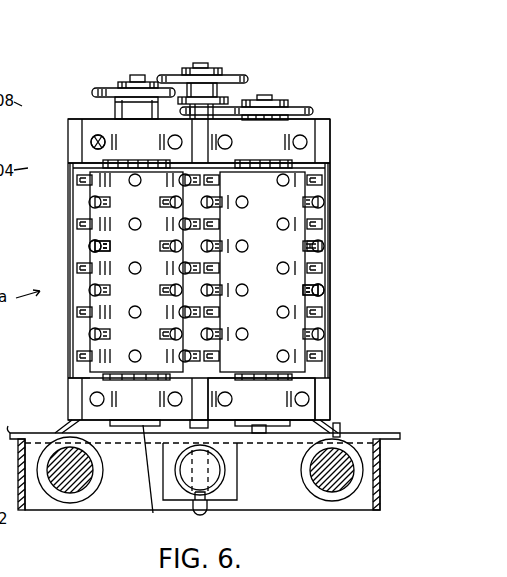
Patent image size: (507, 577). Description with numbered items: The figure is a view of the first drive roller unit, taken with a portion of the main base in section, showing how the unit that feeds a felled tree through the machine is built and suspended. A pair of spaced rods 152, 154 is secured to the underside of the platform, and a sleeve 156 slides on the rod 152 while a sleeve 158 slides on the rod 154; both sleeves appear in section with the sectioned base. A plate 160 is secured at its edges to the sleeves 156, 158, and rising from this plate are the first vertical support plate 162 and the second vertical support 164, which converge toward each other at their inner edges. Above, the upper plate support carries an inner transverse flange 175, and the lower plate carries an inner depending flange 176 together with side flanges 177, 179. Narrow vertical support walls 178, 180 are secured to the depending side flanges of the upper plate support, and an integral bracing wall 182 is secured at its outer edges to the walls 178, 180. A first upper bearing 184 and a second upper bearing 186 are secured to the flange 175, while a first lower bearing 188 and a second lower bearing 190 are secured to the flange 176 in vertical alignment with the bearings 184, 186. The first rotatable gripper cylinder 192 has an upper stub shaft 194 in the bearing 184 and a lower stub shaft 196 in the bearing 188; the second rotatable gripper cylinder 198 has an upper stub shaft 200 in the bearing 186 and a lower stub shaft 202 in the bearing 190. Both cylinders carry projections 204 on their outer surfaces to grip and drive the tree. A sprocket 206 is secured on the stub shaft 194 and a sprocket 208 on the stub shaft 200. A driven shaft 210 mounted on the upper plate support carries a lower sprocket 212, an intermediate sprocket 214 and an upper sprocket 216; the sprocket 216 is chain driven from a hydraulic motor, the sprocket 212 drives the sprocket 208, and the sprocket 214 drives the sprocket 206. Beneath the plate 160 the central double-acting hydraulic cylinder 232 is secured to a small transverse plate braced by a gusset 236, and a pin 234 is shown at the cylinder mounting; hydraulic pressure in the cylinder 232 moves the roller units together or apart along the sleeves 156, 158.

The rod 152 is at (340, 469).
The rod 154 is at (75, 461).
The sleeve 156 is at (338, 495).
The sleeve 158 is at (90, 476).
The plate 160 is at (310, 431).
The first vertical support plate 162 is at (73, 426).
The second vertical support 164 is at (322, 413).
The inner transverse flange 175 is at (73, 130).
The inner depending flange 176 is at (68, 381).
The side flange 177 is at (333, 393).
The narrow vertical support wall 178 is at (330, 199).
The side flange 179 is at (68, 393).
The narrow vertical support wall 180 is at (68, 199).
The integral bracing wall 182 is at (73, 303).
The first upper bearing 184 is at (95, 133).
The second upper bearing 186 is at (314, 118).
The first lower bearing 188 is at (70, 407).
The second lower bearing 190 is at (278, 407).
The first rotatable gripper cylinder 192 is at (88, 220).
The stub shaft 194 is at (140, 82).
The stub shaft 196 is at (152, 506).
The second rotatable gripper cylinder 198 is at (295, 216).
The stub shaft 200 is at (266, 99).
The stub shaft 202 is at (258, 433).
The projections 204 is at (77, 270).
The sprocket 206 is at (105, 88).
The sprocket 208 is at (303, 106).
The driven shaft 210 is at (205, 65).
The lower sprocket 212 is at (250, 84).
The intermediate sprocket 214 is at (221, 98).
The upper sprocket 216 is at (172, 79).
The central double-acting hydraulic cylinder 232 is at (220, 470).
The pin 234 is at (222, 501).
The gusset 236 is at (163, 493).